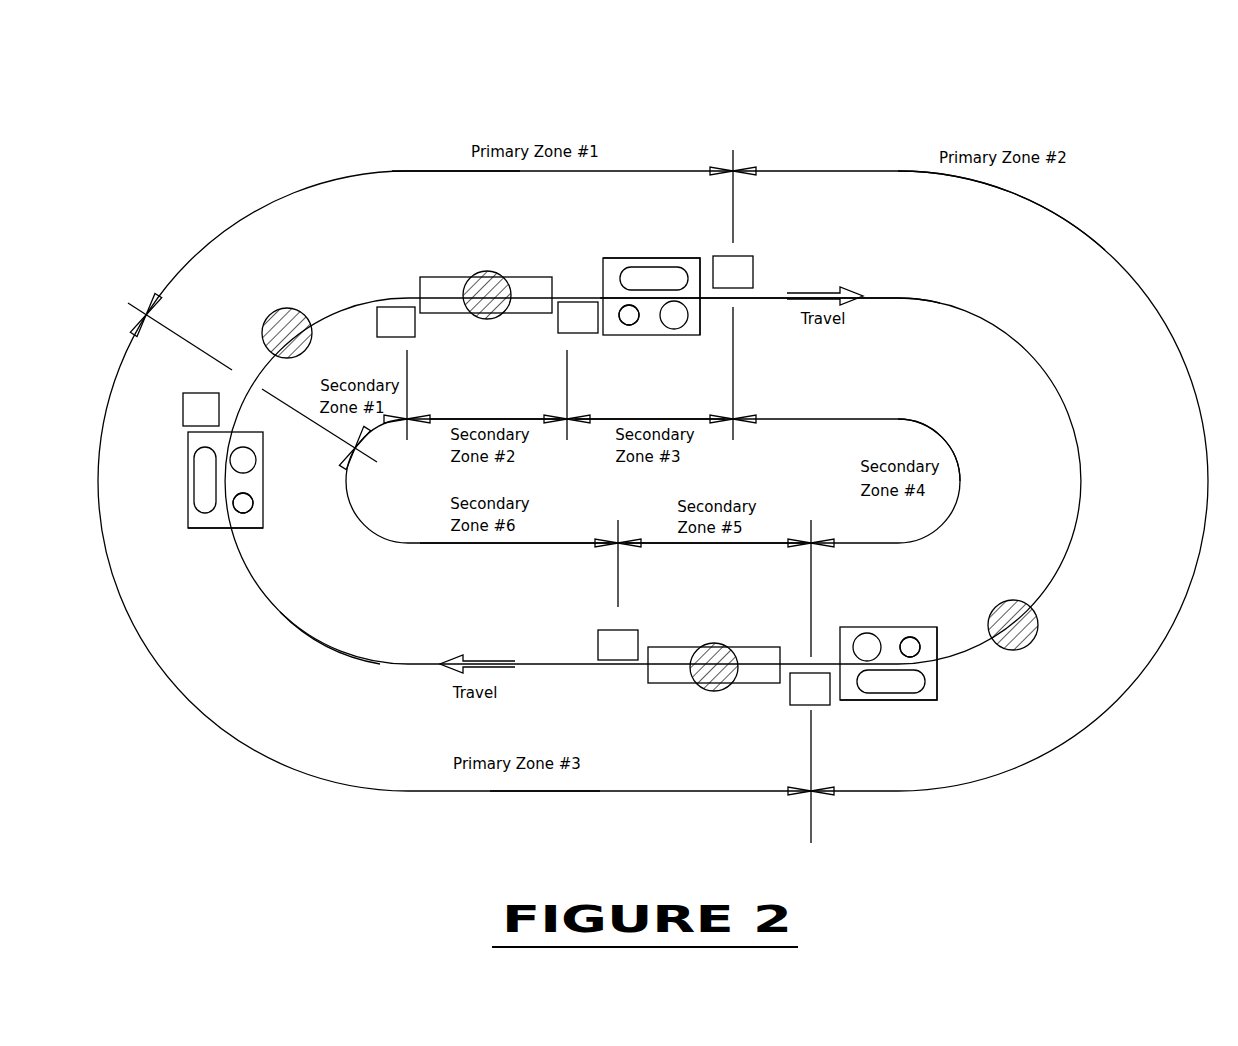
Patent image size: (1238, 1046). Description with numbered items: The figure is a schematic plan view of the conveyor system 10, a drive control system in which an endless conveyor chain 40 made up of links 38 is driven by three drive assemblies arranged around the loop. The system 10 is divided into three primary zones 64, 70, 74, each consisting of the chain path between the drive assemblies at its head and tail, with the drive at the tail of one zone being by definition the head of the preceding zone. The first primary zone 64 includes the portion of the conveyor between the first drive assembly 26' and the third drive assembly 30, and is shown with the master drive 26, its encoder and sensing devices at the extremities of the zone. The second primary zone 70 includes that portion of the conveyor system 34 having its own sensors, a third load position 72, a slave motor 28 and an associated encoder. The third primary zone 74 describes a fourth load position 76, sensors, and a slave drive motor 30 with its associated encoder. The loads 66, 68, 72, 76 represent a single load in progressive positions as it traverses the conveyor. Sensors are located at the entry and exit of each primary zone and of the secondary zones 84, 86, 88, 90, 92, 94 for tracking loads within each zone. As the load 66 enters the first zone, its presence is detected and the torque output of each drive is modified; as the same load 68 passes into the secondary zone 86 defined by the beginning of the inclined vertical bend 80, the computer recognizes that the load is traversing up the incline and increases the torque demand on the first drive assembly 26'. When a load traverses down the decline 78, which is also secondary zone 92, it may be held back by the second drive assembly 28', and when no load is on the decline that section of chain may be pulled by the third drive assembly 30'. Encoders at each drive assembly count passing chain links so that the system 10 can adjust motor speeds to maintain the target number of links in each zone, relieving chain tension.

The conveyor system 10 is at (218, 157).
The master drive 26 is at (659, 293).
The first drive assembly 26' is at (660, 262).
The slave motor 28 is at (888, 657).
The second drive assembly 28' is at (920, 688).
The slave drive motor 30 is at (221, 480).
The third drive assembly 30' is at (204, 546).
The conveyor system 34 is at (381, 664).
The links 38 is at (280, 612).
The conveyor chain 40 is at (940, 303).
The first primary zone 64 is at (392, 171).
The load 66 is at (277, 312).
The load 68 is at (475, 318).
The second primary zone 70 is at (1105, 250).
The third load position 72 is at (1020, 650).
The third primary zone 74 is at (490, 791).
The fourth load position 76 is at (720, 643).
The decline 78 is at (780, 698).
The inclined vertical bend 80 is at (420, 268).
The secondary zone 84 is at (403, 455).
The secondary zone 86 is at (478, 418).
The secondary zone 88 is at (640, 418).
The secondary zone 90 is at (960, 480).
The secondary zone 92 is at (705, 543).
The secondary zone 94 is at (492, 545).